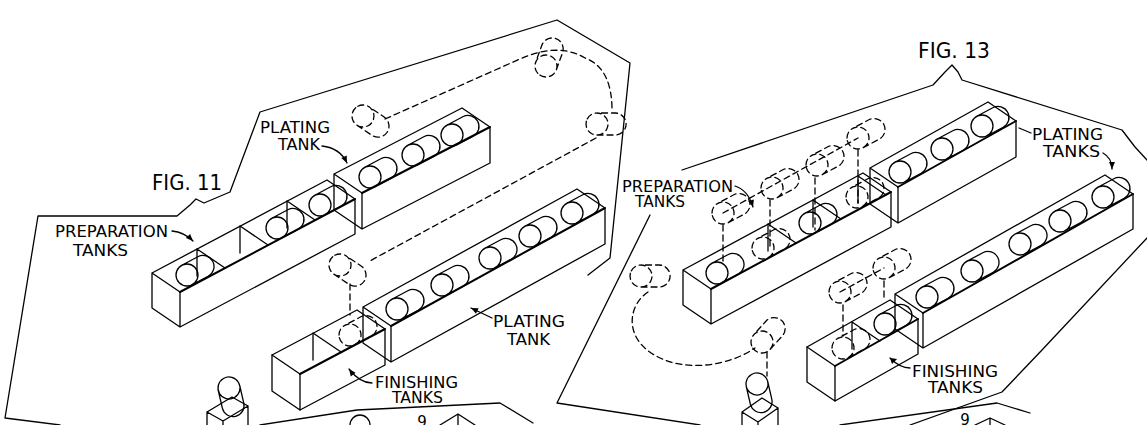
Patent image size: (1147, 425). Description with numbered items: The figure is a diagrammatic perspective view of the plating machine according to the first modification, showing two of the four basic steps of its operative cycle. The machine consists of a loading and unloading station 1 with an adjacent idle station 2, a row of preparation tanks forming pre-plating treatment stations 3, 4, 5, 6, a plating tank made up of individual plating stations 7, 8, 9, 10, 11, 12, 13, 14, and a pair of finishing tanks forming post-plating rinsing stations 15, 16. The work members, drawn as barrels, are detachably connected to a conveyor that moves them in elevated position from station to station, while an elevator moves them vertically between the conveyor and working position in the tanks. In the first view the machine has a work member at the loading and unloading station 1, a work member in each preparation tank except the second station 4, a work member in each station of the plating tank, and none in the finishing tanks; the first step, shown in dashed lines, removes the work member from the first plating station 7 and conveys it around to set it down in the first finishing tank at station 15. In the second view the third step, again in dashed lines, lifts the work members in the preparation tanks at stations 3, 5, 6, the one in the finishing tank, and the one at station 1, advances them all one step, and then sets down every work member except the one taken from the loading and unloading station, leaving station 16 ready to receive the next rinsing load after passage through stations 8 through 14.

In FIG. 11, the loading and unloading station 1 is at (220, 400).
In FIG. 13, the loading and unloading station 1 is at (752, 398).
In FIG. 11, the idle station 2 is at (91, 387).
In FIG. 13, the idle station 2 is at (646, 386).
In FIG. 11, the pre-plating treatment station 3 is at (190, 265).
In FIG. 13, the pre-plating treatment station 3 is at (720, 262).
In FIG. 11, the pre-plating treatment station 4 is at (211, 246).
In FIG. 13, the pre-plating treatment station 4 is at (770, 236).
In FIG. 11, the pre-plating treatment station 5 is at (272, 224).
In FIG. 13, the pre-plating treatment station 5 is at (816, 211).
In FIG. 11, the pre-plating treatment station 6 is at (317, 199).
In FIG. 13, the pre-plating treatment station 6 is at (860, 186).
In FIG. 11, the plating station 7 is at (373, 167).
In FIG. 13, the plating station 7 is at (904, 160).
In FIG. 11, the plating station 8 is at (418, 143).
In FIG. 13, the plating station 8 is at (943, 138).
In FIG. 11, the plating station 9 is at (454, 124).
In FIG. 13, the plating station 9 is at (980, 116).
In FIG. 11, the plating station 10 is at (559, 214).
In FIG. 13, the plating station 10 is at (1089, 201).
In FIG. 11, the plating station 11 is at (498, 237).
In FIG. 13, the plating station 11 is at (1028, 224).
In FIG. 11, the plating station 12 is at (451, 262).
In FIG. 13, the plating station 12 is at (982, 249).
In FIG. 11, the plating station 13 is at (407, 287).
In FIG. 13, the plating station 13 is at (936, 276).
In FIG. 11, the plating station 14 is at (355, 280).
In FIG. 13, the plating station 14 is at (896, 265).
In FIG. 11, the post-plating rinsing station 15 is at (345, 332).
In FIG. 13, the post-plating rinsing station 15 is at (882, 321).
In FIG. 11, the post-plating rinsing station 16 is at (286, 368).
In FIG. 13, the post-plating rinsing station 16 is at (838, 360).